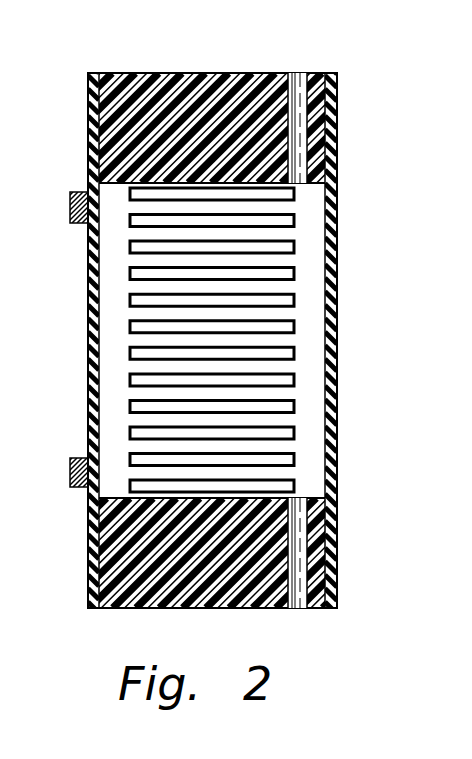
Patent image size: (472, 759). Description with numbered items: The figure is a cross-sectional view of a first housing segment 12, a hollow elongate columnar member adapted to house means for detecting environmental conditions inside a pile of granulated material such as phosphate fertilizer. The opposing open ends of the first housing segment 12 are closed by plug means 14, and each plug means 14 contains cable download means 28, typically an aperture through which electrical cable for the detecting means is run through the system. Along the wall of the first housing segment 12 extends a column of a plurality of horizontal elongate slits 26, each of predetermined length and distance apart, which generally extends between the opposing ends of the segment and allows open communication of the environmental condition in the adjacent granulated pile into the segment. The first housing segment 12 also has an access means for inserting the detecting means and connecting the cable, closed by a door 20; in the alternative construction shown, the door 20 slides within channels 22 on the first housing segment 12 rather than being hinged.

The first housing segment 12 is at (338, 109).
The plug means 14 is at (250, 122).
The door 20 is at (87, 432).
The channels 22 is at (73, 198).
The horizontal elongate slits 26 is at (294, 248).
The cable download means 28 is at (300, 88).